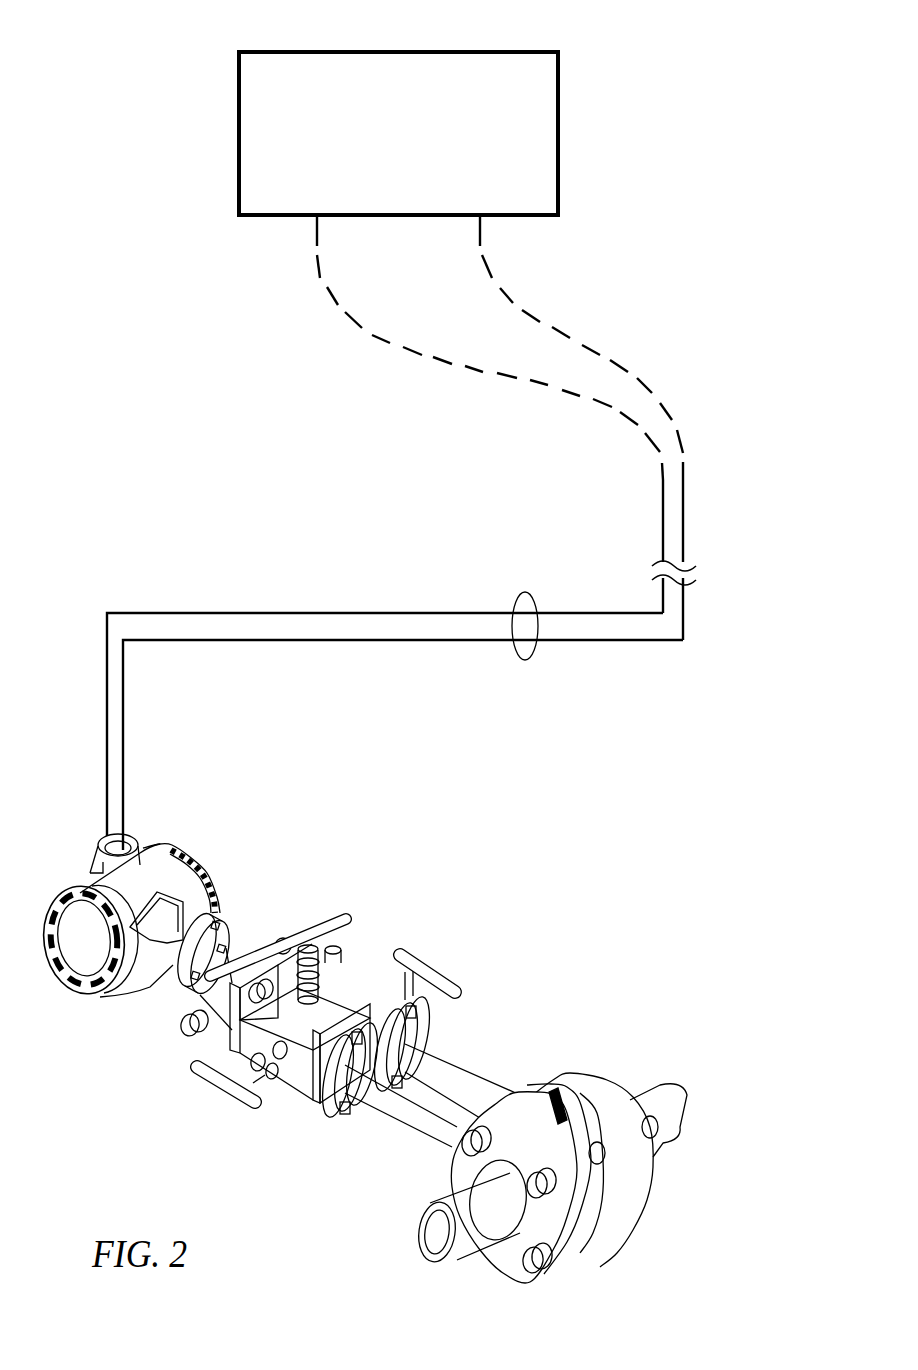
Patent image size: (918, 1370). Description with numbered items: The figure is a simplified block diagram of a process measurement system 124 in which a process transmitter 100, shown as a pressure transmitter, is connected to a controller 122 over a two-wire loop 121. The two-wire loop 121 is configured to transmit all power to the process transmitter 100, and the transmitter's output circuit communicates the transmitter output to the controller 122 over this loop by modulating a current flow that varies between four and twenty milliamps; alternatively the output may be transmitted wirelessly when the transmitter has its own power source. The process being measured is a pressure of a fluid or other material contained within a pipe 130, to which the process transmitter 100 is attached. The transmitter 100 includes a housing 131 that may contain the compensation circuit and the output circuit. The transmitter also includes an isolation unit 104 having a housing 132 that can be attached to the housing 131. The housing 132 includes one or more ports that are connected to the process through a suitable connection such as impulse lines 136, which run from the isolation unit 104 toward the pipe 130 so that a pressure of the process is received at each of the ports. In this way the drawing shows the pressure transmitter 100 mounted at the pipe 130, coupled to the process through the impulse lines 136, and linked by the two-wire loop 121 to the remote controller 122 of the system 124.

The process transmitter 100 is at (386, 1037).
The isolation unit 104 is at (177, 937).
The two-wire loop 121 is at (528, 660).
The controller 122 is at (243, 85).
The process measurement system 124 is at (700, 50).
The pipe 130 is at (670, 1157).
The housing 131 is at (163, 863).
The housing 132 is at (227, 913).
The impulse lines 136 is at (422, 1112).